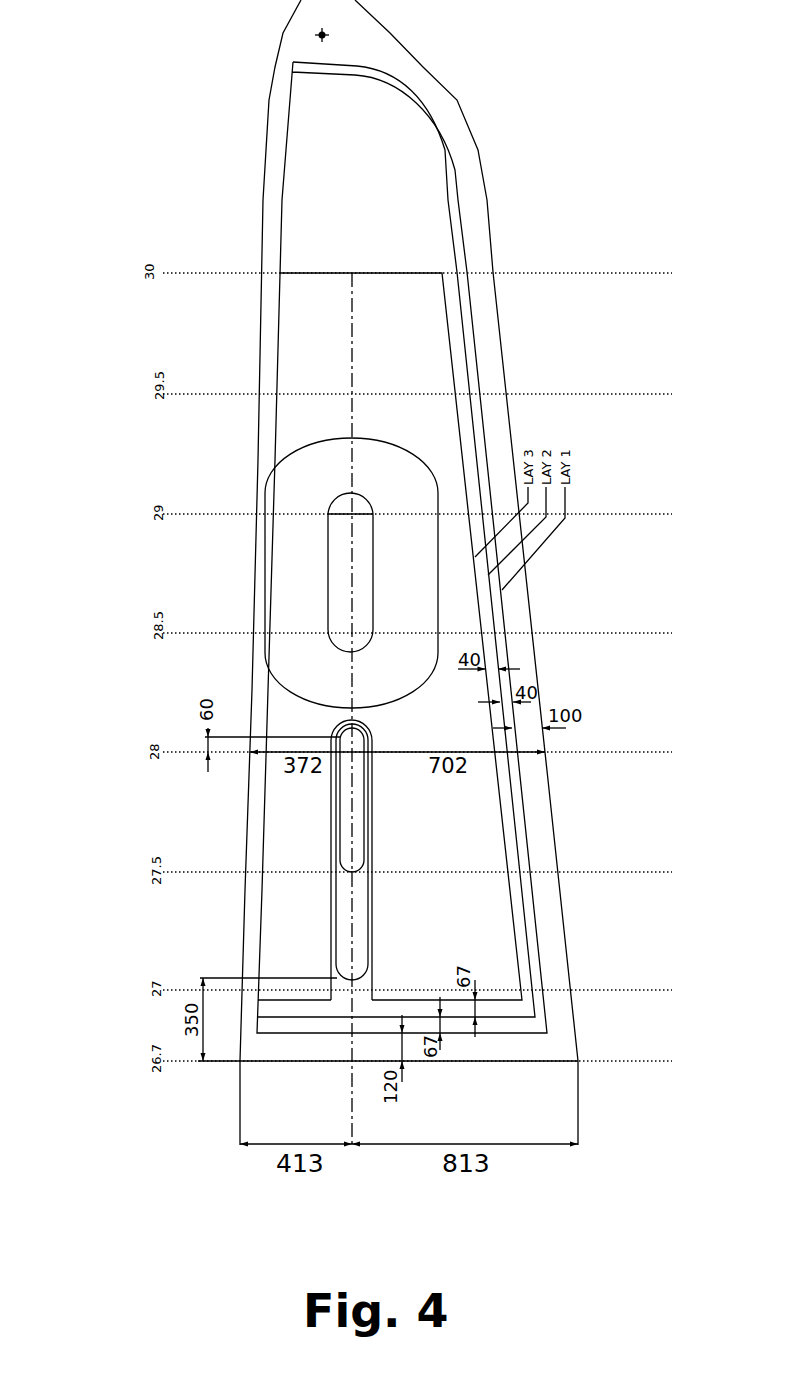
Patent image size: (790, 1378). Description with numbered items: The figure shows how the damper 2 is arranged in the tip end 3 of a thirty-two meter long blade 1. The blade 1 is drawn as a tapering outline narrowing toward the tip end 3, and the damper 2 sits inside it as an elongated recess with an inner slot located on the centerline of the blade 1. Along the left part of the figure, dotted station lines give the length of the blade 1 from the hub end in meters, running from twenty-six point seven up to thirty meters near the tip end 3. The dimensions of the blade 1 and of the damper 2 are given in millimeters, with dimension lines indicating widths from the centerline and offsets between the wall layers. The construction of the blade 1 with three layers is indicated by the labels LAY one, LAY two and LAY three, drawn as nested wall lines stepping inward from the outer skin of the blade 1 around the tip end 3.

The blade 1 is at (237, 177).
The damper 2 is at (302, 577).
The tip end 3 is at (170, 677).